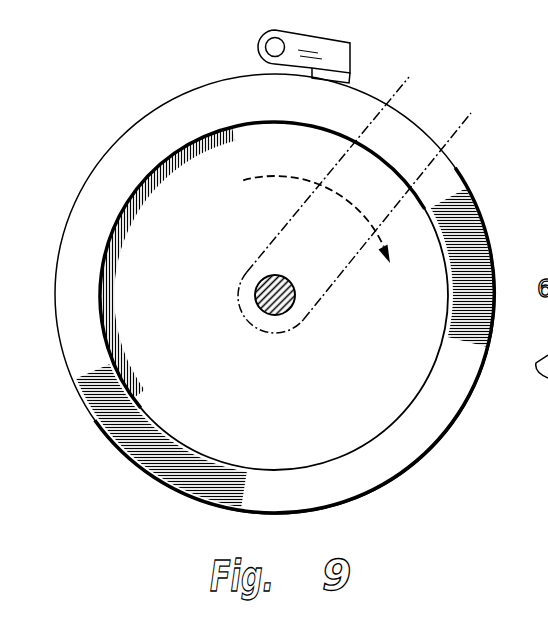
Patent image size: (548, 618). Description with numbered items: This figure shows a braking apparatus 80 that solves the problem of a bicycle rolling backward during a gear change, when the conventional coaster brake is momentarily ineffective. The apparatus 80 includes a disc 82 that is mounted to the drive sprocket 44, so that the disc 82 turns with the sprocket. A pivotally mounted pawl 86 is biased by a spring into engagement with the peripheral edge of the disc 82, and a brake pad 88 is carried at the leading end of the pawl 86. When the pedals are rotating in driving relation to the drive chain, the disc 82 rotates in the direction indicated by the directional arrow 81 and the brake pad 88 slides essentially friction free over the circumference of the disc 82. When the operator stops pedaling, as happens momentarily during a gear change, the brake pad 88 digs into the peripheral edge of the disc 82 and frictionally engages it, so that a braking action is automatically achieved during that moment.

The braking apparatus 80 is at (164, 57).
The disc 82 is at (128, 168).
The drive sprocket 44 is at (210, 368).
The directional arrow 81 is at (268, 180).
The pawl 86 is at (323, 48).
The brake pad 88 is at (322, 76).